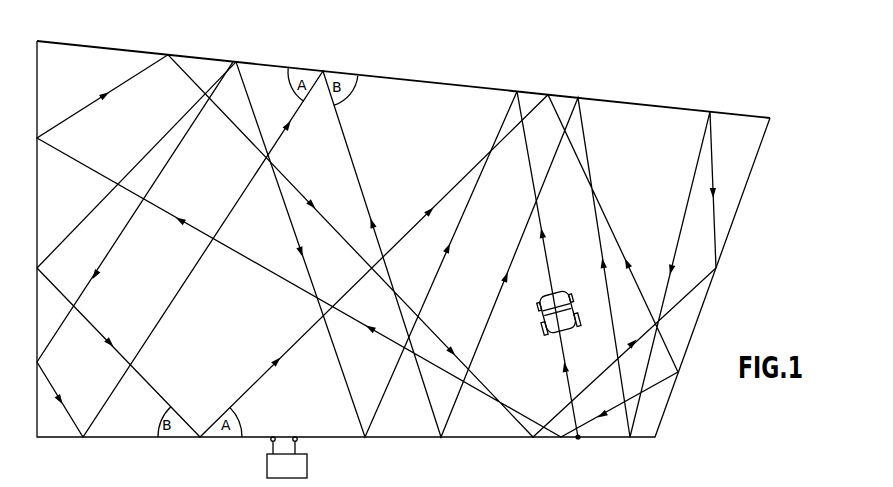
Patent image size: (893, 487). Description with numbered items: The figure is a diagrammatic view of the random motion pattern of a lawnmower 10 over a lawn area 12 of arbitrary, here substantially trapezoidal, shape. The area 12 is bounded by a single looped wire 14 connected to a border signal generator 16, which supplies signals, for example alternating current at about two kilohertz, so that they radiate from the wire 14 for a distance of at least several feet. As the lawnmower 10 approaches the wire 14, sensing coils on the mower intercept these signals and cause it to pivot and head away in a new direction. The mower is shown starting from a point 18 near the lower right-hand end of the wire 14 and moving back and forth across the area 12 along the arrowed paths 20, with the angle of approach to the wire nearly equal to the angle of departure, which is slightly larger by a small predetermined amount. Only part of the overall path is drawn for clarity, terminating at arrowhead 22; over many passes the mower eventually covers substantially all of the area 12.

The lawnmower 10 is at (571, 294).
The area 12 is at (465, 104).
The looped wire 14 is at (430, 82).
The border signal generator 16 is at (267, 461).
The point 18 is at (578, 437).
The arrowed paths 20 is at (412, 228).
The arrowhead 22 is at (151, 146).